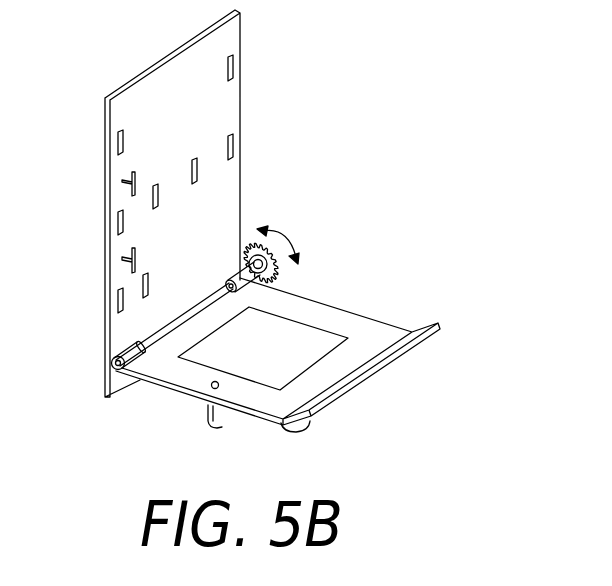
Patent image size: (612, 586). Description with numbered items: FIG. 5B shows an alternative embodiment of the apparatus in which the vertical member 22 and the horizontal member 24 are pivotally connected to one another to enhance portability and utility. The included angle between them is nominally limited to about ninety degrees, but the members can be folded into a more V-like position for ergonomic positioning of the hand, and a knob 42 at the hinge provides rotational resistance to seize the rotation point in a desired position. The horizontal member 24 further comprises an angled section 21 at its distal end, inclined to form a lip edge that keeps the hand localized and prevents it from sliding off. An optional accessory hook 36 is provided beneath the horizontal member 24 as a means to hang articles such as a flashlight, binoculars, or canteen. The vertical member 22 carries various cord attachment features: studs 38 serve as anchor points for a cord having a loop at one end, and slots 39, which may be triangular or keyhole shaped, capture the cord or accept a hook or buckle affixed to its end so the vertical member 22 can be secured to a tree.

The angled section 21 is at (298, 432).
The vertical member 22 is at (240, 193).
The horizontal member 24 is at (330, 310).
The accessory hook 36 is at (205, 415).
The studs 38 is at (137, 259).
The slots 39 is at (117, 300).
The knob 42 is at (277, 236).